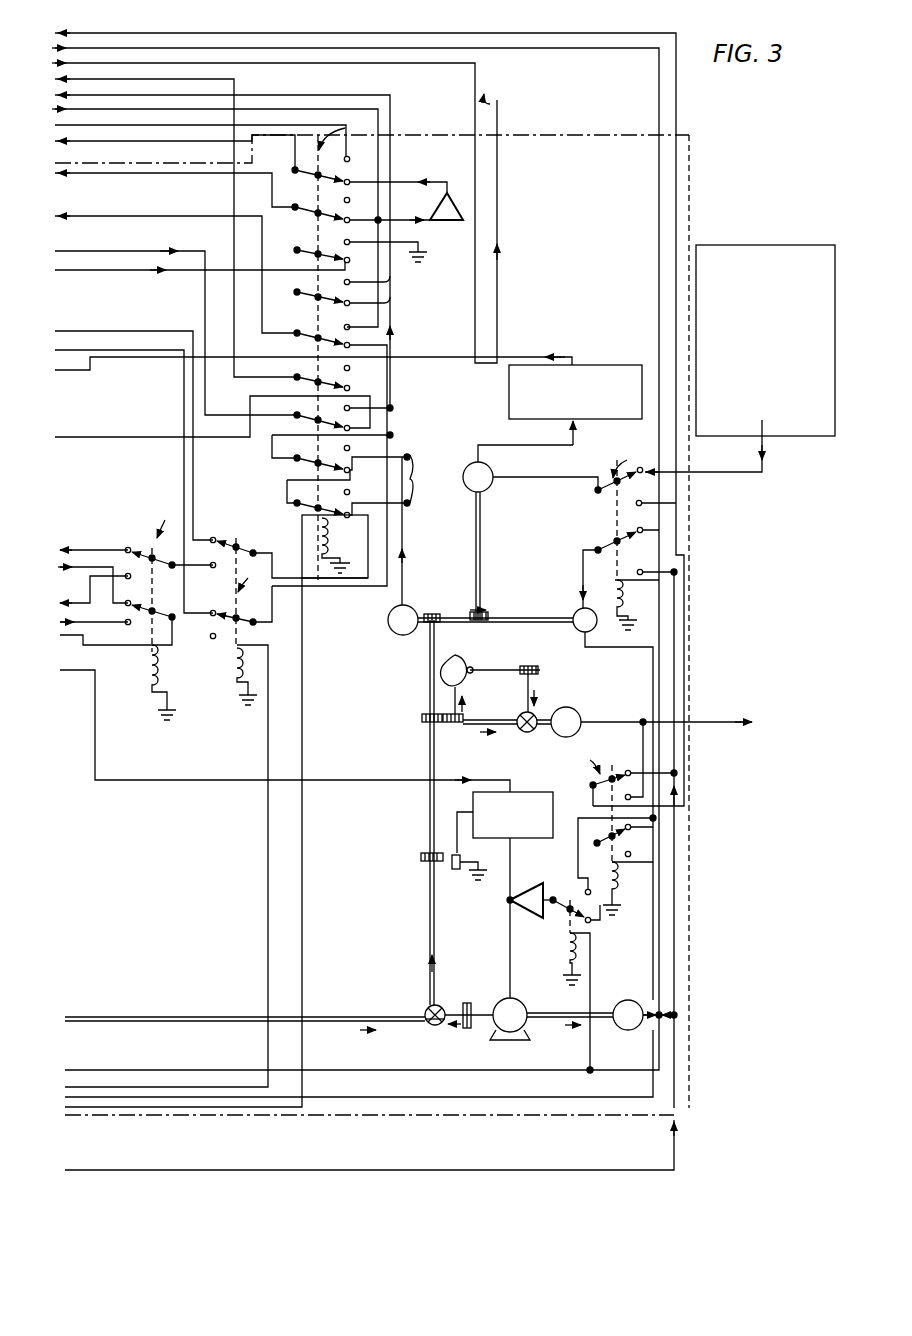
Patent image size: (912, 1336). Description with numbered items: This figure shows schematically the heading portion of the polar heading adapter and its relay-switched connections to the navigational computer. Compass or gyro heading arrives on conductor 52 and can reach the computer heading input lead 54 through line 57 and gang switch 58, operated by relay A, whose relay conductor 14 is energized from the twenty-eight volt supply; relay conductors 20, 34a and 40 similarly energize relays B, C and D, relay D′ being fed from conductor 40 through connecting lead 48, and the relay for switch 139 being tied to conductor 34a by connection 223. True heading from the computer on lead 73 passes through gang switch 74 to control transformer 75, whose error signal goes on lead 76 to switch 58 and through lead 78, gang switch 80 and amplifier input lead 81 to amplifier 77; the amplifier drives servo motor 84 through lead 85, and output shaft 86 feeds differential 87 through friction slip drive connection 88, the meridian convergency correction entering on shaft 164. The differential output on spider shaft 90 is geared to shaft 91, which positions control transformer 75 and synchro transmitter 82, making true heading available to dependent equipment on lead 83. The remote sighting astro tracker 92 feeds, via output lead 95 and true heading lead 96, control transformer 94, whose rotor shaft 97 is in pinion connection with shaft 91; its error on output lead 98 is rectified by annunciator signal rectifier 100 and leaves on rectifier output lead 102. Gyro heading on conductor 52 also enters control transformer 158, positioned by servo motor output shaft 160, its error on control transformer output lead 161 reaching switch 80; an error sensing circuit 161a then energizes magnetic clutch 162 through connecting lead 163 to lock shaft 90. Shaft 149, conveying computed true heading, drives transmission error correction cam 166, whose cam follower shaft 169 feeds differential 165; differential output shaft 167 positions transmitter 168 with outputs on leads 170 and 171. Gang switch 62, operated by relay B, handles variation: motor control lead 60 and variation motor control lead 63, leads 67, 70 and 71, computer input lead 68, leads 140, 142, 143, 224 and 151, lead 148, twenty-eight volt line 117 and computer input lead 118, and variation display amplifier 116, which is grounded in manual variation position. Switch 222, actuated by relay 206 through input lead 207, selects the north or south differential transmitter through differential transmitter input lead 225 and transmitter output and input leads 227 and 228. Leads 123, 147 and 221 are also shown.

The heading input lead 54 is at (180, 24).
The lead 73 is at (187, 40).
The 28 volt D.C. line 117 is at (195, 55).
The navigational computer input lead 118 is at (220, 79).
The lead 148 is at (173, 87).
The magnetic variation synchro lead 70 is at (276, 105).
The lead 60 is at (195, 117).
The variation motor control lead 63 is at (108, 142).
The conductor 147 is at (145, 174).
The gang switch 62 is at (343, 129).
The lead 71 is at (87, 216).
The lead 67 is at (112, 251).
The conductor 123 is at (72, 274).
The variation display amplifier 116 is at (452, 192).
The lead 83 is at (498, 224).
The lead 140 is at (118, 331).
The lead 142 is at (135, 350).
The rectifier output lead 102 is at (112, 365).
The lead 143 is at (376, 363).
The lead 151 is at (102, 435).
The computer input lead 68 is at (400, 382).
The lead 224 is at (308, 586).
The annunciator signal rectifier 100 is at (634, 364).
The output lead 98 is at (578, 436).
The control transformer 94 is at (491, 464).
The true heading lead 96 is at (575, 470).
The gang switch 74 is at (636, 536).
The remote sighting astro tracker 92 is at (784, 246).
The output lead 95 is at (748, 474).
The rotor shaft 97 is at (484, 557).
The control transformer 75 is at (586, 606).
The lead 76 is at (582, 648).
The shaft 91 is at (491, 616).
The synchro transmitter 82 is at (388, 623).
The conductor 52 is at (675, 619).
The spider shaft 90 is at (426, 688).
The shaft 149 is at (470, 732).
The transmission error correction cam 166 is at (446, 657).
The cam follower shaft 169 is at (496, 668).
The differential 165 is at (520, 715).
The differential output shaft 167 is at (534, 734).
The transmitter 168 is at (576, 706).
The output lead 170 is at (695, 722).
The lead 171 is at (640, 748).
The gang switch 58 is at (626, 818).
The line 57 is at (684, 770).
The error sensing circuit 161a is at (525, 794).
The relay conductor 14 is at (174, 786).
The connecting lead 163 is at (451, 828).
The magnetic clutch 162 is at (450, 872).
The amplifier 77 is at (524, 880).
The amplifier input lead 81 is at (567, 888).
The gang switch 80 is at (561, 884).
The lead 78 is at (600, 918).
The lead 85 is at (510, 946).
The control transformer output lead 161 is at (640, 974).
The shaft 164 is at (212, 1016).
The differential 87 is at (420, 1026).
The friction slip drive connection 88 is at (468, 1030).
The output shaft 86 is at (492, 992).
The servo motor 84 is at (498, 1040).
The servo motor output shaft 160 is at (549, 1028).
The connecting lead 48 is at (584, 1000).
The control transformer 158 is at (638, 1032).
The relay conductor 40 is at (166, 1071).
The conductor 34a is at (192, 1084).
The relay conductor 20 is at (172, 1116).
The conductor 221 is at (86, 548).
The differential transmitter input lead 225 is at (88, 555).
The transmitter input lead 228 is at (84, 598).
The transmitter output lead 227 is at (92, 624).
The switch 222 is at (169, 584).
The input lead 207 is at (97, 648).
The relay 206 is at (154, 676).
The switch 139 is at (289, 613).
The connection 223 is at (266, 756).